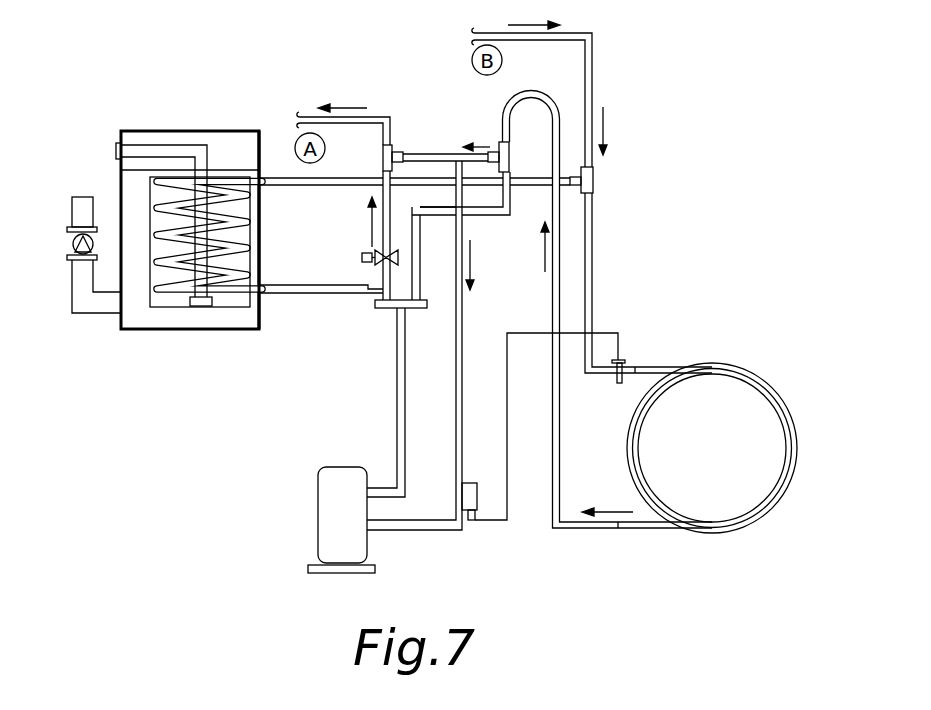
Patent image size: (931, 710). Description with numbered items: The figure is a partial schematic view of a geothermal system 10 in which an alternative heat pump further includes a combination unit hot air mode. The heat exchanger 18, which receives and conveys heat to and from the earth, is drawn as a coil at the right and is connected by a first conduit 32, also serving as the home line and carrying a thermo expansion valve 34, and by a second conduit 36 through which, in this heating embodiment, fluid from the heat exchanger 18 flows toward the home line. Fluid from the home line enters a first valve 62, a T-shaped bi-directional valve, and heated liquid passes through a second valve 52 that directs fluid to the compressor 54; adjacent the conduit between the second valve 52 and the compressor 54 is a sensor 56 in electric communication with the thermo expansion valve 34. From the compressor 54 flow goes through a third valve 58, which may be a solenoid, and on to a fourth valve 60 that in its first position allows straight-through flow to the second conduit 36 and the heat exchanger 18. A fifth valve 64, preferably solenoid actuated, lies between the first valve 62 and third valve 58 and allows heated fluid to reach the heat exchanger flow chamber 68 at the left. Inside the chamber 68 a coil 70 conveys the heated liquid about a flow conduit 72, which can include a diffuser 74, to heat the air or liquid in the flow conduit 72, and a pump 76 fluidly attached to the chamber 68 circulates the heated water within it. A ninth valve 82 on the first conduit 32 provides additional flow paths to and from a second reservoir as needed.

The water heating system 10 is at (605, 80).
The heat exchanger 18 is at (752, 376).
The first conduit 32 is at (665, 367).
The thermo expansion valve 34 is at (620, 360).
The second conduit 36 is at (590, 530).
The second valve 52 is at (447, 153).
The compressor 54 is at (318, 535).
The sensor 56 is at (478, 502).
The third valve 58 is at (385, 308).
The fourth valve 60 is at (496, 150).
The first valve 62 is at (383, 156).
The fifth valve 64 is at (372, 256).
The heat exchanger flow chamber 68 is at (128, 312).
The coil 70 is at (165, 297).
The flow conduit 72 is at (118, 148).
The diffuser 74 is at (214, 307).
The pump 76 is at (73, 244).
The ninth valve 82 is at (595, 180).